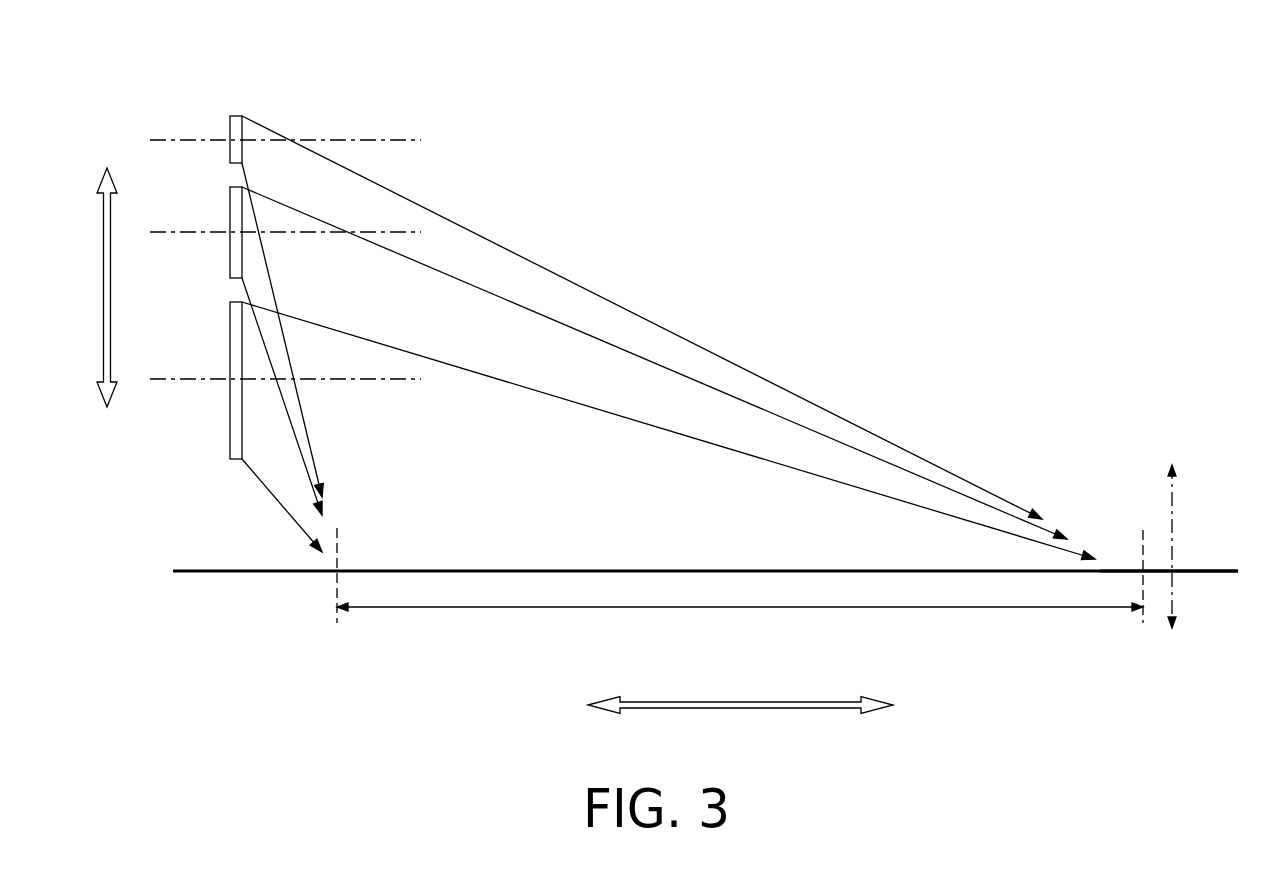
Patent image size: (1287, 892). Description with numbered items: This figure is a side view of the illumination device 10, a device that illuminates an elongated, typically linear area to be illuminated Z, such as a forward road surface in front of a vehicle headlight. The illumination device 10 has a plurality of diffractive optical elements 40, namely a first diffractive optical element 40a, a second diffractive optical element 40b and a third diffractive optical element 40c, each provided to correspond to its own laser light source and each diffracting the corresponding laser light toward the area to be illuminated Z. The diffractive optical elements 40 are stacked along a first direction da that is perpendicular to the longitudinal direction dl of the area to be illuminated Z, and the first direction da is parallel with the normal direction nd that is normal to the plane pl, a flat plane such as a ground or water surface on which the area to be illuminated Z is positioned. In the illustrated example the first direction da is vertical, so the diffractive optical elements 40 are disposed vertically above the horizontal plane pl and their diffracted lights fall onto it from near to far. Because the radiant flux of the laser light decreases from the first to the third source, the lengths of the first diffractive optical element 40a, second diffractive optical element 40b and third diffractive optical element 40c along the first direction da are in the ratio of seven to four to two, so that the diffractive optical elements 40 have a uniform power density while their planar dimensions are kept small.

The illumination device 10 is at (328, 101).
The diffractive optical elements 40 is at (236, 287).
The first diffractive optical element 40a is at (230, 331).
The second diffractive optical element 40b is at (230, 208).
The third diffractive optical element 40c is at (230, 119).
The first direction da is at (91, 287).
The area to be illuminated Z is at (740, 590).
The longitudinal direction dl is at (740, 722).
The normal direction nd is at (1172, 531).
The plane pl is at (1210, 571).